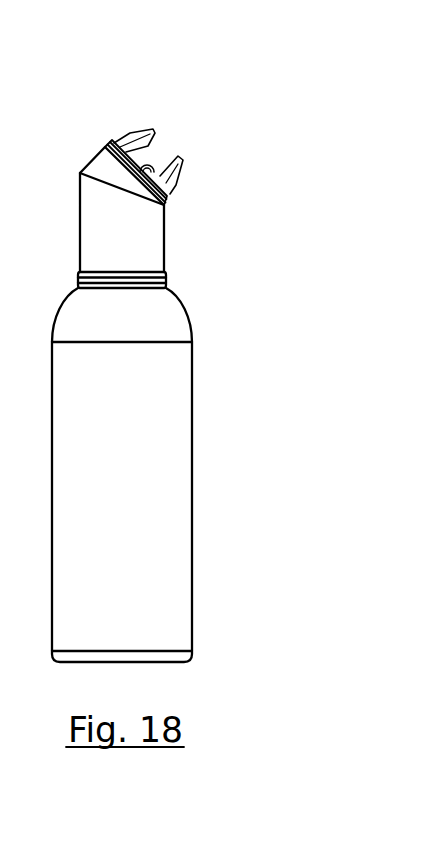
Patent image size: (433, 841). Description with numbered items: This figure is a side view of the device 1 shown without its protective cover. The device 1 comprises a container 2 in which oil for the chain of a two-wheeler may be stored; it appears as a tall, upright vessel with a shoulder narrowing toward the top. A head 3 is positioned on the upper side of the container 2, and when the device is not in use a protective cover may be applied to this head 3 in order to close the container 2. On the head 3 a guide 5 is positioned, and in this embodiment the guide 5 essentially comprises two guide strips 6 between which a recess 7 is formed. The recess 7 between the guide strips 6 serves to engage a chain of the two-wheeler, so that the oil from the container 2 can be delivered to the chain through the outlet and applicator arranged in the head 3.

The device 1 is at (173, 348).
The container 2 is at (116, 494).
The head 3 is at (171, 162).
The guide 5 is at (138, 115).
The guide strips 6 is at (134, 134).
The recess 7 is at (173, 144).